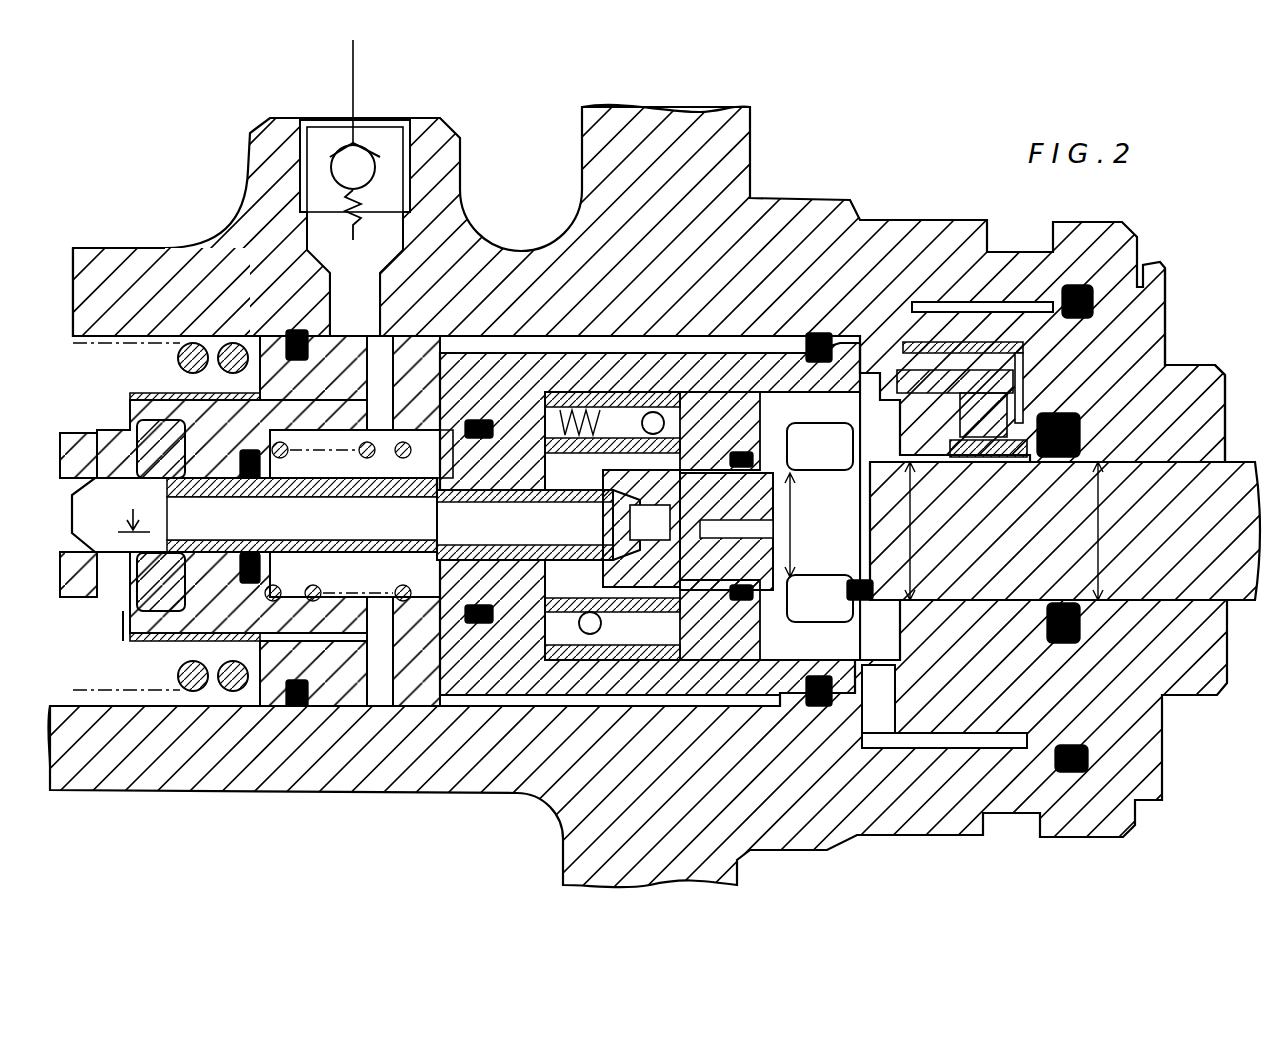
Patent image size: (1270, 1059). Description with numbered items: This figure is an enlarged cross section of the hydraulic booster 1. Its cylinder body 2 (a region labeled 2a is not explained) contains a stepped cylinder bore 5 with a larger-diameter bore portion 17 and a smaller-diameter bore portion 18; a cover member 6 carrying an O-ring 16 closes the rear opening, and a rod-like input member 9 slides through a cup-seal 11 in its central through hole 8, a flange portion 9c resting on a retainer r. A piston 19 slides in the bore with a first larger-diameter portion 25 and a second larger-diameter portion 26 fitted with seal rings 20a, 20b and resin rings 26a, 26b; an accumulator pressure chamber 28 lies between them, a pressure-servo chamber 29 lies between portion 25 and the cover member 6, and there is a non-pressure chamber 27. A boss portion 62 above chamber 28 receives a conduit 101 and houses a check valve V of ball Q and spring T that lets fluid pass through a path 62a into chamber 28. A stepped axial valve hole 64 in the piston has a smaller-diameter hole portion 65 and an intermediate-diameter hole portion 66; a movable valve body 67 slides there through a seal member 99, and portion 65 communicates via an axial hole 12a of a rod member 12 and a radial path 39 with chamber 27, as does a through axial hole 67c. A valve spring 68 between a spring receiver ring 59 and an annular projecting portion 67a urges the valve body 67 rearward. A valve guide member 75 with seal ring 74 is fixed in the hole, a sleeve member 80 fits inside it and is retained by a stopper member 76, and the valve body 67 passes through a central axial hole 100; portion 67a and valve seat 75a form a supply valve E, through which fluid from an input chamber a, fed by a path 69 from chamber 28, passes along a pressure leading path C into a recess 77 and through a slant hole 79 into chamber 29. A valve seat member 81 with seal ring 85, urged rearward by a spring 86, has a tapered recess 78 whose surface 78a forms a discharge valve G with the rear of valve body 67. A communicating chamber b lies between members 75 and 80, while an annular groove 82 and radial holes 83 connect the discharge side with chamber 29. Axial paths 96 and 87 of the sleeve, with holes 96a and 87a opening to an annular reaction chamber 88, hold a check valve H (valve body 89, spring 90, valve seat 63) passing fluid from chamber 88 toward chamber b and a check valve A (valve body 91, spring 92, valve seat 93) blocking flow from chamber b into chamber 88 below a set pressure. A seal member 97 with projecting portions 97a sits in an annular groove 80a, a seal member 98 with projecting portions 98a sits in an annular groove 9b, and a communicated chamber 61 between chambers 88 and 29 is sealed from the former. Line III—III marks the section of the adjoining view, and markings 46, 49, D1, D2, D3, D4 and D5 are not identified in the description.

The hydraulic booster 1 is at (917, 160).
The cylinder body 2 is at (508, 262).
The housing top surface 2a is at (752, 148).
The stepped cylinder bore 5 is at (455, 705).
The cover member 6 is at (1183, 385).
The central through hole 8 is at (1240, 590).
The input member 9 is at (1245, 480).
The annular groove 9b is at (870, 585).
The flange portion 9c is at (1050, 760).
The cup-seal 11 is at (1082, 432).
The rod member 12 is at (82, 625).
The axial hole 12a is at (156, 582).
The O-ring 16 is at (1076, 285).
The larger-diameter bore portion 17 is at (890, 748).
The smaller-diameter bore portion 18 is at (650, 706).
The piston 19 is at (578, 360).
The seal ring 20a is at (810, 340).
The seal ring 20b is at (252, 355).
The first larger-diameter portion 25 is at (850, 300).
The second larger-diameter portion 26 is at (220, 343).
The synthetic resin ring 26a is at (822, 332).
The synthetic resin ring 26b is at (297, 330).
The non-pressure chamber 27 is at (125, 409).
The accumulator pressure chamber 28 is at (552, 345).
The pressure-servo chamber 29 is at (894, 363).
The radial path 39 is at (130, 450).
The plate 46 is at (122, 625).
The passage 49 is at (555, 695).
The spring receiver ring 59 is at (262, 440).
The communicated chamber 61 is at (950, 501).
The boss portion 62 is at (347, 186).
The path 62a is at (383, 306).
The valve seat 63 is at (668, 380).
The stepped axial valve hole 64 is at (345, 612).
The smaller-diameter hole portion 65 is at (218, 560).
The intermediate-diameter hole portion 66 is at (290, 610).
The movable valve body 67 is at (460, 630).
The annular projecting portion 67a is at (425, 630).
The through axial hole 67c is at (505, 625).
The valve spring 68 is at (262, 600).
The path 69 is at (368, 388).
The seal ring 74 is at (478, 418).
The valve guide member 75 is at (505, 418).
The valve seat 75a is at (455, 418).
The stopper member 76 is at (978, 340).
The recess 77 is at (400, 462).
The tapered recess 78 is at (641, 528).
The valve seat 78a is at (652, 620).
The slant hole 79 is at (566, 350).
The sleeve member 80 is at (710, 392).
The annular groove 80a is at (742, 695).
The valve seat member 81 is at (683, 395).
The annular groove 82 is at (882, 395).
The radial holes 83 is at (941, 706).
The seal ring 85 is at (720, 431).
The spring 86 is at (538, 525).
The axial path 87 is at (628, 695).
The axial hole 87a is at (780, 706).
The annular reaction chamber 88 is at (818, 450).
The valve body 89 is at (650, 380).
The spring 90 is at (598, 392).
The valve body 91 is at (590, 635).
The spring 92 is at (675, 645).
The valve seat 93 is at (590, 695).
The axial path 96 is at (622, 370).
The axial hole 96a is at (755, 420).
The seal member 97 is at (752, 605).
The projecting portions 97a is at (715, 650).
The seal member 98 is at (860, 580).
The projecting portions 98a is at (915, 600).
The seal member 99 is at (230, 623).
The central axial hole 100 is at (283, 515).
The conduit 101 is at (353, 65).
The check valve A is at (535, 706).
The pressure leading path C is at (440, 410).
The supply valve E is at (440, 515).
The discharge valve G is at (600, 521).
The check valve H is at (634, 426).
The ball Q is at (332, 170).
The spring T is at (335, 190).
The check valve V is at (378, 135).
The input chamber a is at (334, 483).
The communicating chamber b is at (540, 645).
The retainer r is at (925, 300).
The diameter D1 is at (1105, 531).
The diameter D2 is at (920, 531).
The diameter D3 is at (800, 525).
The diameter D4 is at (544, 521).
The diameter D5 is at (845, 505).
The line III— III is at (572, 506).